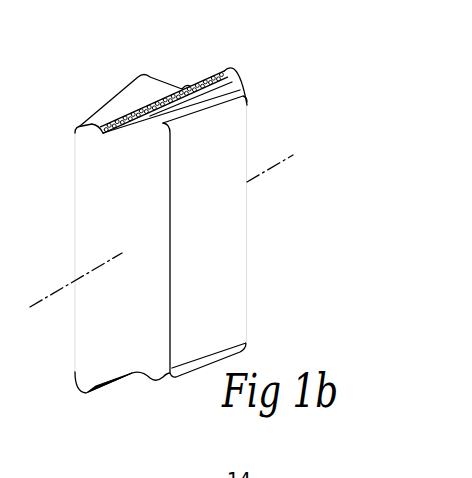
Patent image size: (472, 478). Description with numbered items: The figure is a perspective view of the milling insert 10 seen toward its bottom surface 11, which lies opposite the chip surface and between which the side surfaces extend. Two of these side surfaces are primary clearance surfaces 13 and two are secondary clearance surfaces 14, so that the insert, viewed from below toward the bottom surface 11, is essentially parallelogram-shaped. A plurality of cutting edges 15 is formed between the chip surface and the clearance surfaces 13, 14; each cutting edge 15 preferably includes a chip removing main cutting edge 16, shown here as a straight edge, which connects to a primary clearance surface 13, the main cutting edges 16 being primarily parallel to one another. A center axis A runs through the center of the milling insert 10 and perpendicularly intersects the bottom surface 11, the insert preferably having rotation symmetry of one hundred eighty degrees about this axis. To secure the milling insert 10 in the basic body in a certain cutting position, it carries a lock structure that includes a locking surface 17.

The milling insert 10 is at (191, 228).
The bottom surface 11 is at (131, 222).
The primary clearance surface 13 is at (221, 242).
The secondary clearance surface 14 is at (162, 100).
The cutting edge 15 is at (248, 113).
The main cutting edge 16 is at (246, 212).
The locking surface 17 is at (145, 117).
The center axis A is at (152, 239).